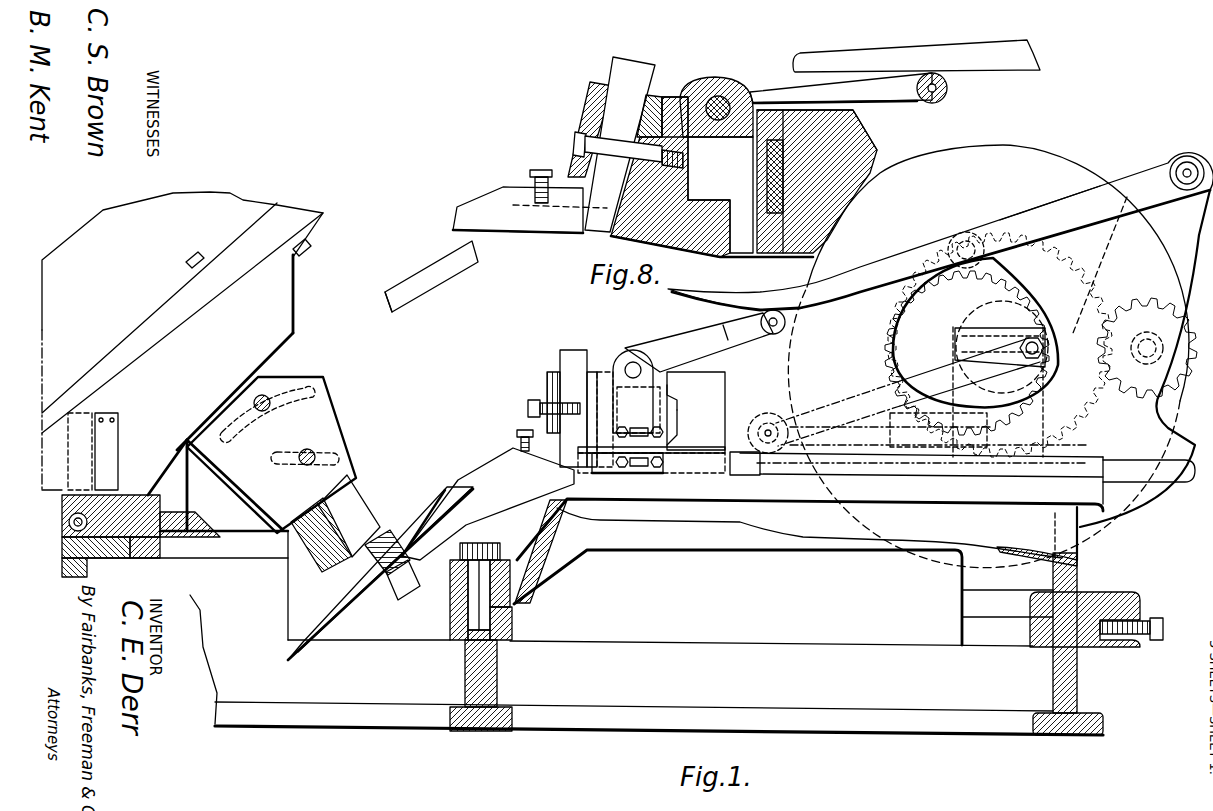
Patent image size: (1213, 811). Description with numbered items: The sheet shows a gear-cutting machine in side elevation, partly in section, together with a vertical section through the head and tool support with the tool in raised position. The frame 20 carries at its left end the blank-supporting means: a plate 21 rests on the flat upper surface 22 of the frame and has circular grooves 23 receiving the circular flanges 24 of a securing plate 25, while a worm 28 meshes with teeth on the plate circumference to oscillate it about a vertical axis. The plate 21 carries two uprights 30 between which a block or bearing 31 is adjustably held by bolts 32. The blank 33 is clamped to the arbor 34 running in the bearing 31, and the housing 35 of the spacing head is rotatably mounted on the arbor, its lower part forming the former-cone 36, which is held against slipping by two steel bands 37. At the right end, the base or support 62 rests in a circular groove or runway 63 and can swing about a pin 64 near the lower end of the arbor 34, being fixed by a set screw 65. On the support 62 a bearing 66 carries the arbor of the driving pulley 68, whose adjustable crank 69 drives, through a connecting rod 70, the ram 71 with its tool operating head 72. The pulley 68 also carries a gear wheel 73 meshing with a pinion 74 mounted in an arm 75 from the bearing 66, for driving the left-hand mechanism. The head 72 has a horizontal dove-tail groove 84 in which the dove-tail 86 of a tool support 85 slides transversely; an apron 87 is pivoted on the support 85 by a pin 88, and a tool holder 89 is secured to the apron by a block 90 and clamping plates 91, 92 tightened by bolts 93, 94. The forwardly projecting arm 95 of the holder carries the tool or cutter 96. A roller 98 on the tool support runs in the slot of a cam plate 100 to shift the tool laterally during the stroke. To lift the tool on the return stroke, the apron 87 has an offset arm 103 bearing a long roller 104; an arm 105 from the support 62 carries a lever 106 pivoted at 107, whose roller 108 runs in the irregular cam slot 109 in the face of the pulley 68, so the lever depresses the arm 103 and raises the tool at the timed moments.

In FIG. 1, the frame 20 is at (488, 672).
In FIG. 1, the plate 21 is at (196, 522).
In FIG. 1, the flat upper surface 22 is at (83, 543).
In FIG. 1, the circular grooves 23 is at (158, 550).
In FIG. 1, the circular flanges 24 is at (71, 525).
In FIG. 1, the securing plate 25 is at (68, 500).
In FIG. 1, the worm 28 is at (73, 530).
In FIG. 1, the uprights 30 is at (328, 416).
In FIG. 1, the block or bearing 31 is at (283, 418).
In FIG. 1, the bolts 32 is at (272, 398).
In FIG. 1, the blank 33 is at (432, 284).
In FIG. 1, the arbor 34 is at (347, 503).
In FIG. 1, the housing 35 is at (233, 203).
In FIG. 1, the former-cone 36 is at (152, 455).
In FIG. 1, the steel bands 37 is at (75, 413).
In FIG. 1, the base or support 62 is at (552, 540).
In FIG. 1, the circular groove or runway 63 is at (1063, 633).
In FIG. 1, the pin 64 is at (517, 613).
In FIG. 1, the set screw 65 is at (1158, 640).
In FIG. 1, the bearing 66 is at (975, 332).
In FIG. 1, the driving pulley 68 is at (1060, 170).
In FIG. 1, the crank 69 is at (1024, 343).
In FIG. 1, the connecting rod 70 is at (937, 377).
In FIG. 1, the ram 71 is at (853, 398).
In FIG. 8, the tool operating head 72 is at (780, 254).
In FIG. 1, the tool operating head 72 is at (710, 403).
In FIG. 1, the gear wheel 73 is at (888, 321).
In FIG. 1, the pinion 74 is at (1155, 397).
In FIG. 1, the arm 75 is at (1080, 274).
In FIG. 8, the dove-tail groove 84 is at (817, 218).
In FIG. 1, the dove-tail groove 84 is at (670, 442).
In FIG. 8, the tool support 85 is at (740, 238).
In FIG. 1, the tool support 85 is at (645, 383).
In FIG. 8, the dove-tail 86 is at (830, 133).
In FIG. 1, the dove-tail 86 is at (668, 398).
In FIG. 8, the apron 87 is at (700, 80).
In FIG. 8, the pin 88 is at (721, 121).
In FIG. 1, the pin 88 is at (630, 365).
In FIG. 8, the tool holder 89 is at (636, 66).
In FIG. 1, the tool holder 89 is at (560, 366).
In FIG. 8, the block 90 is at (676, 178).
In FIG. 1, the block 90 is at (603, 400).
In FIG. 8, the clamping plate 91 is at (656, 104).
In FIG. 1, the clamping plate 91 is at (598, 422).
In FIG. 8, the clamping plate 92 is at (598, 86).
In FIG. 1, the clamping plate 92 is at (552, 396).
In FIG. 8, the bolt 93 is at (608, 150).
In FIG. 1, the bolt 94 is at (527, 407).
In FIG. 8, the forwardly projecting arm 95 is at (518, 200).
In FIG. 1, the forwardly projecting arm 95 is at (517, 449).
In FIG. 8, the tool or cutter 96 is at (477, 205).
In FIG. 1, the tool or cutter 96 is at (500, 477).
In FIG. 1, the pin or roller 98 is at (643, 470).
In FIG. 1, the cam plate 100 is at (598, 452).
In FIG. 8, the offset arm 103 is at (843, 86).
In FIG. 1, the offset arm 103 is at (673, 345).
In FIG. 8, the roller 104 is at (929, 100).
In FIG. 1, the roller 104 is at (785, 327).
In FIG. 1, the arm 105 is at (1153, 242).
In FIG. 8, the lever 106 is at (1010, 65).
In FIG. 1, the lever 106 is at (1067, 207).
In FIG. 1, the pivot 107 is at (1186, 168).
In FIG. 1, the roller 108 is at (964, 240).
In FIG. 1, the cam slot 109 is at (1055, 293).